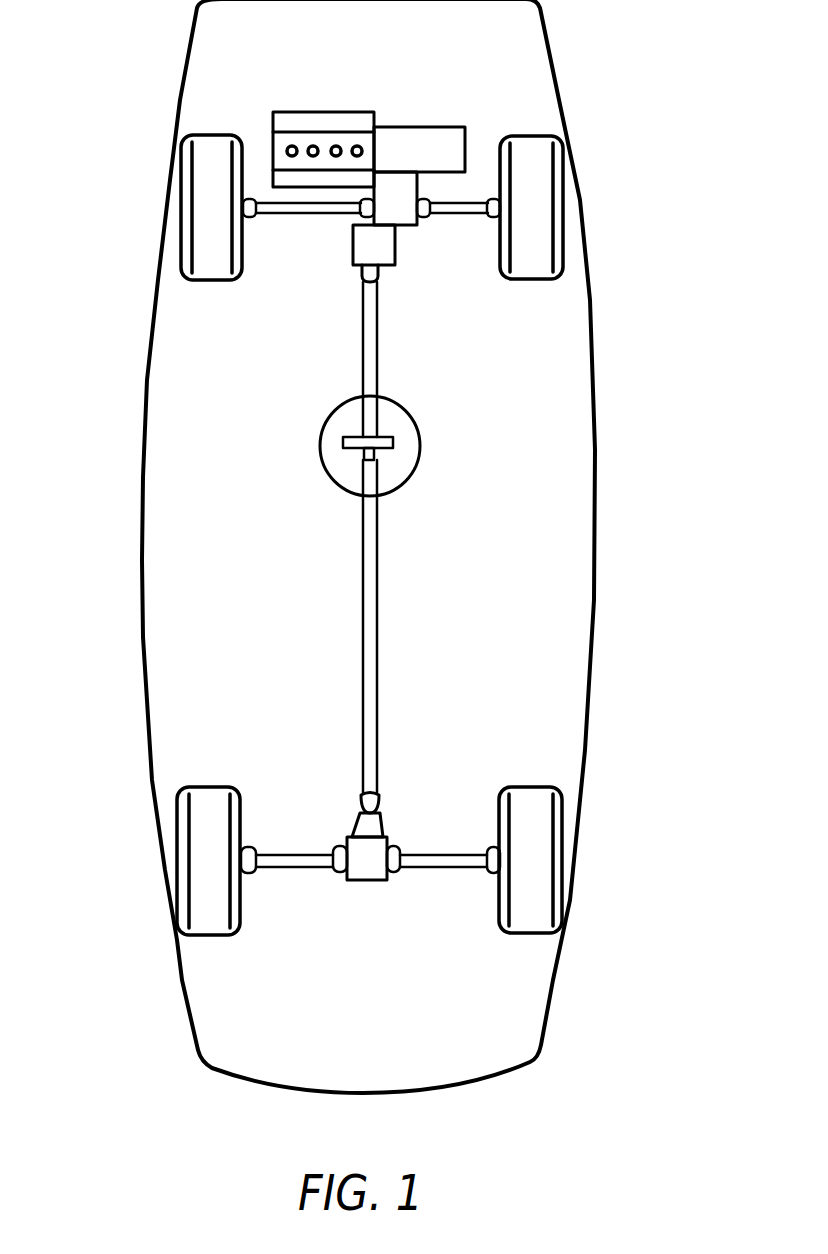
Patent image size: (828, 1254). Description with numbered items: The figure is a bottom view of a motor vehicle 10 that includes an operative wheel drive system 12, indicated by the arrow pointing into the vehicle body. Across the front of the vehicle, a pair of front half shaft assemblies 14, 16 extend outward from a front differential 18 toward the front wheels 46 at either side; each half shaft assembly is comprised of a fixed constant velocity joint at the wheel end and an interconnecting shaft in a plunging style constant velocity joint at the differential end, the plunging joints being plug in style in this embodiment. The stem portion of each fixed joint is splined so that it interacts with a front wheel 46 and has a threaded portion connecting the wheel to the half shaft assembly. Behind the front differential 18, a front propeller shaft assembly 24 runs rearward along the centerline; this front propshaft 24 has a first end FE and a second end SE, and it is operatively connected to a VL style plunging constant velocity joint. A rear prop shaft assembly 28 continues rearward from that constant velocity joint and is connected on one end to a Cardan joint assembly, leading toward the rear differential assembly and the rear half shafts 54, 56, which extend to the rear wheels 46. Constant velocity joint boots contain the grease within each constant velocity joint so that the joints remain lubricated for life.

The motor vehicle 10 is at (587, 270).
The operative wheel drive system 12 is at (238, 488).
The front half shaft assembly 14 is at (465, 200).
The front half shaft assembly 16 is at (270, 208).
The front differential 18 is at (377, 243).
The front propeller shaft assembly 24 is at (368, 345).
The rear prop shaft assembly 28 is at (368, 628).
The front wheel 46 is at (213, 198).
The left rear axle shaft 54 is at (293, 870).
The right rear axle shaft 56 is at (443, 870).
The first end FE is at (363, 292).
The second end SE is at (367, 425).